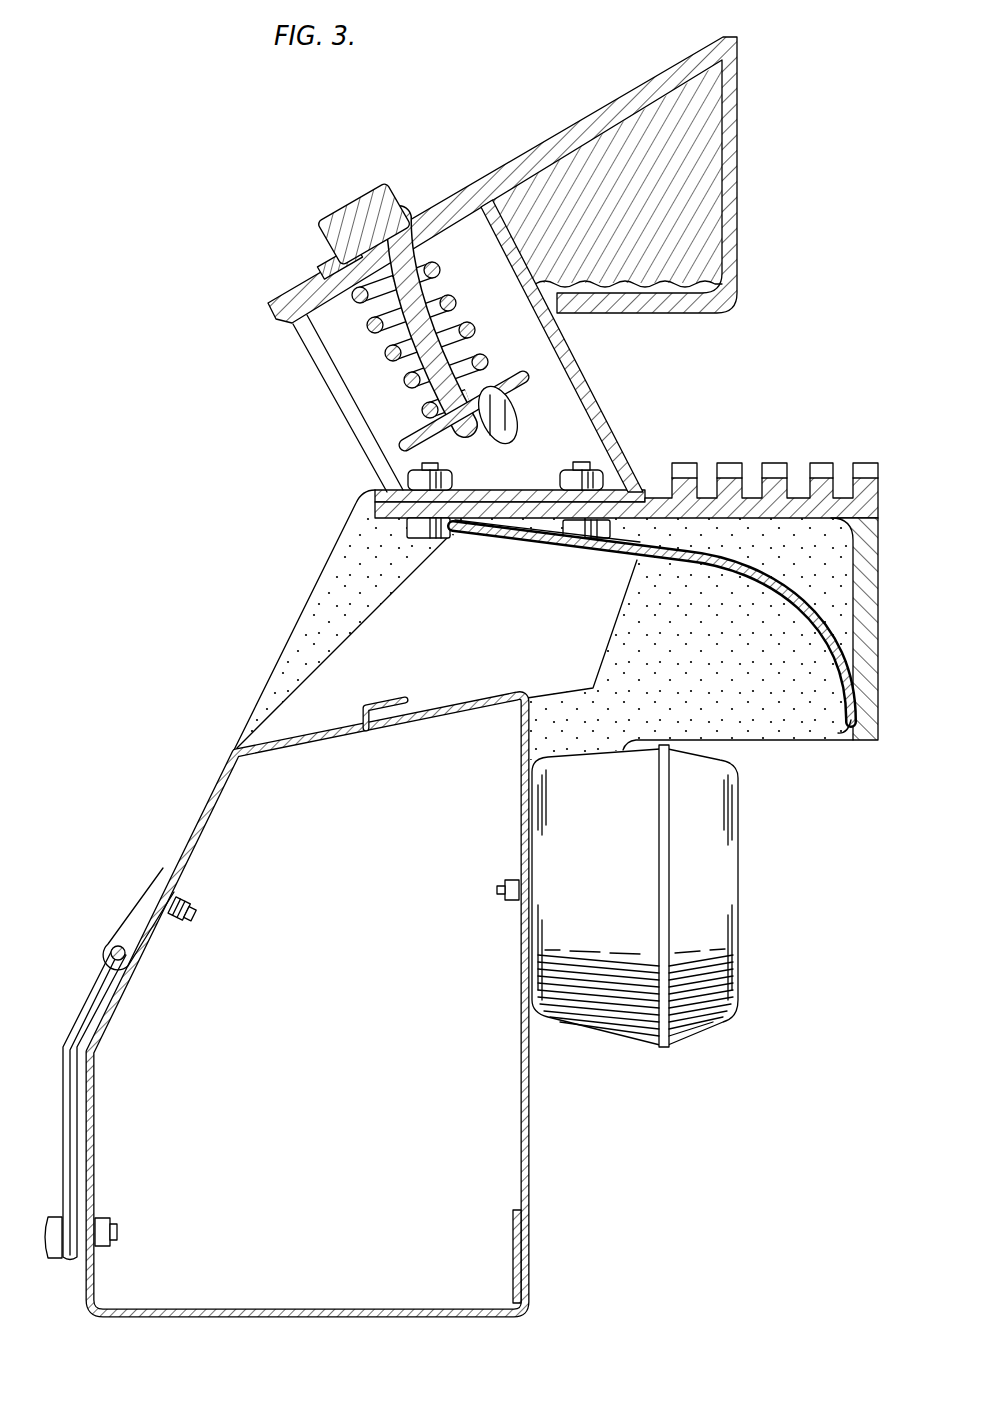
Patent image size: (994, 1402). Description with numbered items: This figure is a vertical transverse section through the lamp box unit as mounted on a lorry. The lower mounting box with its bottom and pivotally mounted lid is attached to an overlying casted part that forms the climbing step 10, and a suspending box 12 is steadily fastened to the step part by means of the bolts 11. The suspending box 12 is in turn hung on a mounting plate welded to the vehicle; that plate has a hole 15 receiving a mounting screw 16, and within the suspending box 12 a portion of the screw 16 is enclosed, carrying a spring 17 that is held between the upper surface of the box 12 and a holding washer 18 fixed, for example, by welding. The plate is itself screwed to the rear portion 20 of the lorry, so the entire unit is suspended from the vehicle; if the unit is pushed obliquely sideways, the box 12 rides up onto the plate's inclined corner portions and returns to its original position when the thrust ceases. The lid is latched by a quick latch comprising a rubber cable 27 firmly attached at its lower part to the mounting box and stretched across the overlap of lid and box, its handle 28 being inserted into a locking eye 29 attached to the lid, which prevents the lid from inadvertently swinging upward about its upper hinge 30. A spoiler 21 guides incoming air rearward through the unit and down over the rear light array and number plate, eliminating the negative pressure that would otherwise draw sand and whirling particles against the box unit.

The climbing step 10 is at (821, 478).
The bolts 11 is at (560, 479).
The suspending box 12 is at (600, 404).
The hole 15 is at (349, 287).
The mounting screw 16 is at (438, 283).
The spring 17 is at (472, 329).
The holding washer 18 is at (408, 442).
The rear portion of the lorry 20 is at (740, 222).
The spoiler 21 is at (794, 618).
The rubber cable 27 is at (98, 1077).
The handle 28 is at (141, 953).
The locking eye 29 is at (130, 921).
The upper hinge 30 is at (411, 707).